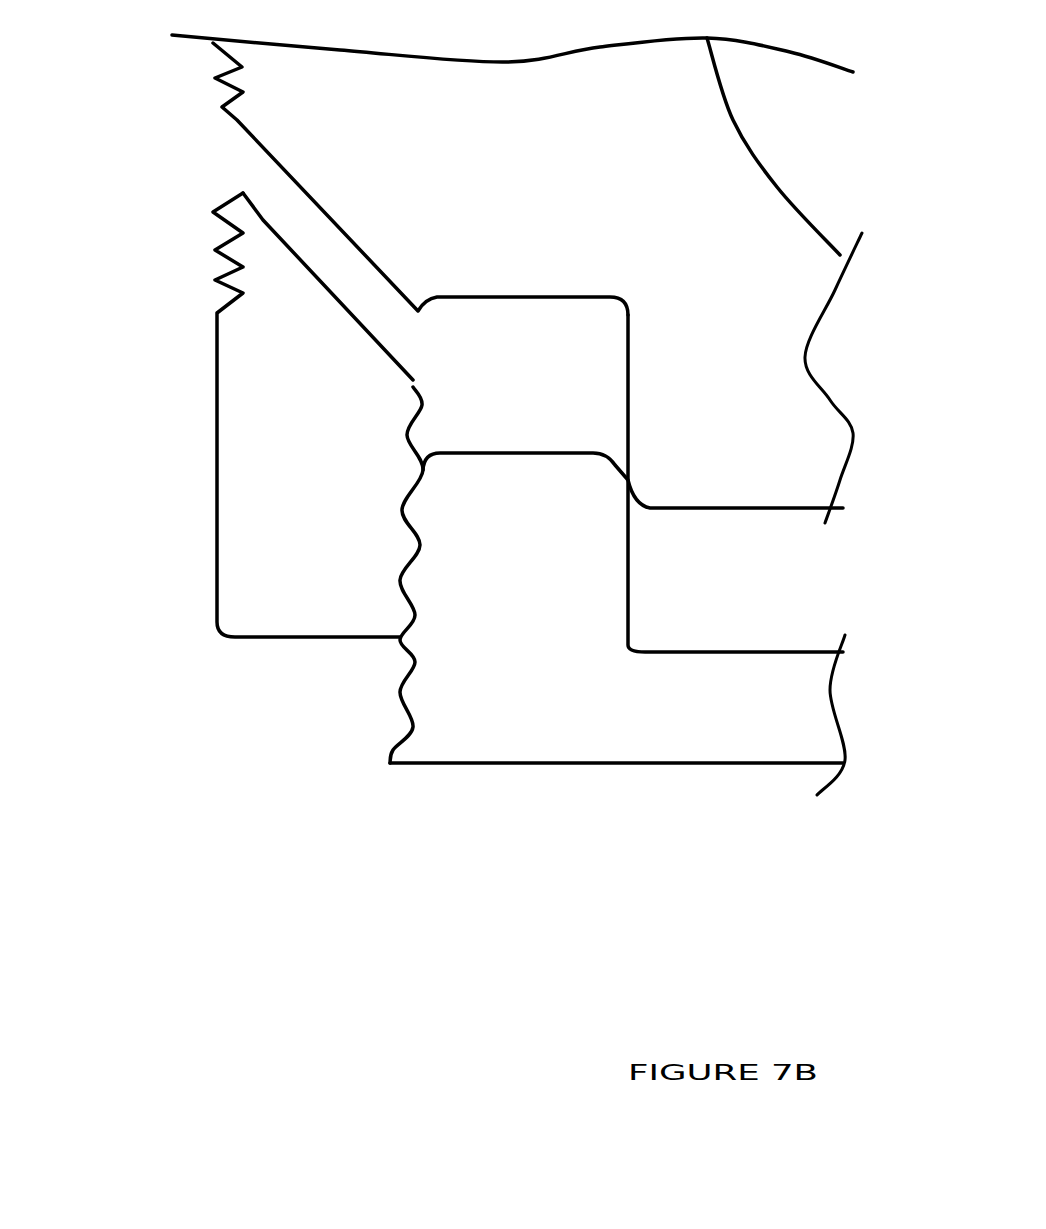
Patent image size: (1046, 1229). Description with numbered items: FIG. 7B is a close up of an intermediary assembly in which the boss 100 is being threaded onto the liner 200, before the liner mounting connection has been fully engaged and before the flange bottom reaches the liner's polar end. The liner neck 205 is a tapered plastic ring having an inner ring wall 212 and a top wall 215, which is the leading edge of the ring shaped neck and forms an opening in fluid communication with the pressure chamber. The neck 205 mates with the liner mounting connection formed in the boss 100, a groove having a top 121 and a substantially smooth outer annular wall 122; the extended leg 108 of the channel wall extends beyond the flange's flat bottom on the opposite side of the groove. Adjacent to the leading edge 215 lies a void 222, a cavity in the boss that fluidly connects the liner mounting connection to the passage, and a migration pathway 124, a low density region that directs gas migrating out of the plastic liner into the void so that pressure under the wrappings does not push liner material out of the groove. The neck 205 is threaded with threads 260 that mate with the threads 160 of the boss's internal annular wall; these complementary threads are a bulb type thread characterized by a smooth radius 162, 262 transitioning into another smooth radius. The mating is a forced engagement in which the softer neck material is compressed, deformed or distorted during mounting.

The boss 100 is at (616, 130).
The extended leg 108 is at (190, 610).
The top of LMC groove 121 is at (575, 293).
The outer annular wall 122 is at (628, 413).
The migration pathway 124 is at (290, 204).
The threads 160 is at (383, 610).
The smooth radius 162 is at (452, 412).
The liner 200 is at (775, 728).
The liner neck 205 is at (562, 517).
The inner ring wall 212 is at (336, 737).
The top wall 215 is at (543, 452).
The void 222 is at (379, 286).
The threads 260 is at (445, 485).
The smooth radius 262 is at (395, 730).